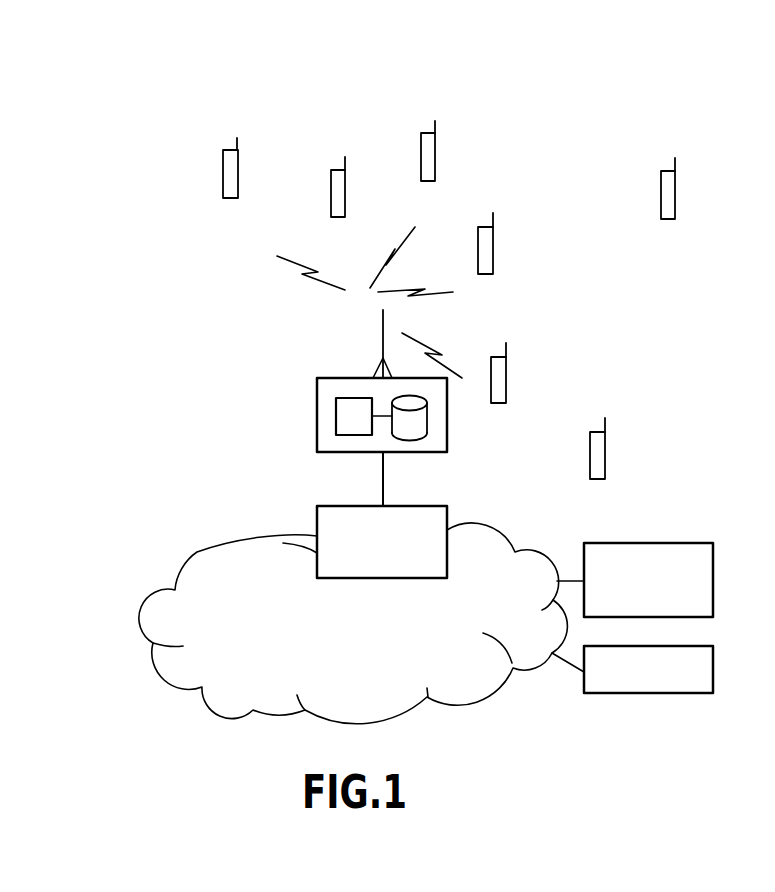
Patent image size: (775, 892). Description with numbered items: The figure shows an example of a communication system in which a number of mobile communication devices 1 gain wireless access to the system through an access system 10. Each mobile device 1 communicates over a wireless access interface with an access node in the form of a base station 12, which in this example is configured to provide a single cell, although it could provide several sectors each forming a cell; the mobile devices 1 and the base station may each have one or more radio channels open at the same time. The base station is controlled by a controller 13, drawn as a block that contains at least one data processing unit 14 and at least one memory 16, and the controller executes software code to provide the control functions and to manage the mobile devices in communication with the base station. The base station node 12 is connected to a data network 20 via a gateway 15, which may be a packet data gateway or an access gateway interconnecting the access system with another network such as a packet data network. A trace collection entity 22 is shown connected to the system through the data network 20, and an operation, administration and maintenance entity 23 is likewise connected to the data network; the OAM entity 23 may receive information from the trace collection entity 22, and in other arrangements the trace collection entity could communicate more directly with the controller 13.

The access system 10 is at (230, 293).
The mobile communication device 1 is at (498, 377).
The base station 12 is at (382, 327).
The controller 13 is at (317, 393).
The data processing unit 14 is at (337, 418).
The memory 16 is at (417, 418).
The gateway 15 is at (317, 515).
The data network 20 is at (193, 570).
The trace collection entity 22 is at (673, 555).
The OAM entity 23 is at (705, 667).